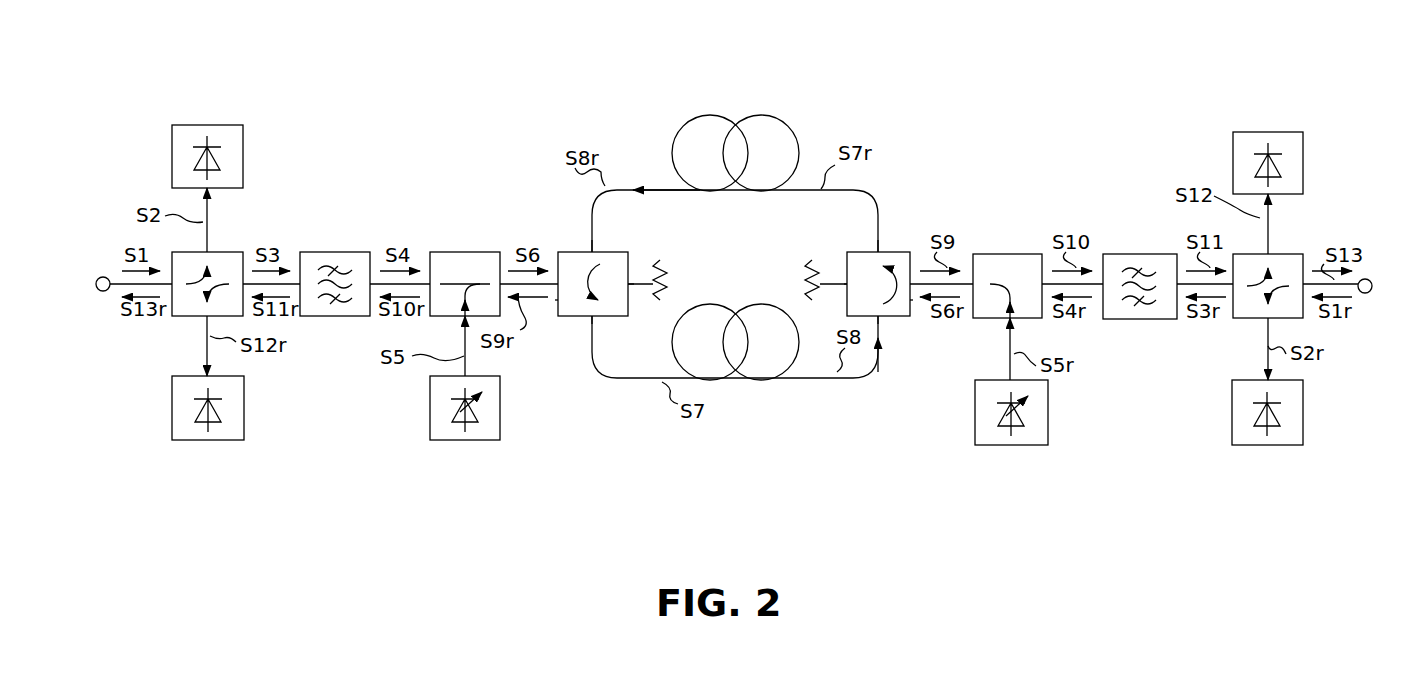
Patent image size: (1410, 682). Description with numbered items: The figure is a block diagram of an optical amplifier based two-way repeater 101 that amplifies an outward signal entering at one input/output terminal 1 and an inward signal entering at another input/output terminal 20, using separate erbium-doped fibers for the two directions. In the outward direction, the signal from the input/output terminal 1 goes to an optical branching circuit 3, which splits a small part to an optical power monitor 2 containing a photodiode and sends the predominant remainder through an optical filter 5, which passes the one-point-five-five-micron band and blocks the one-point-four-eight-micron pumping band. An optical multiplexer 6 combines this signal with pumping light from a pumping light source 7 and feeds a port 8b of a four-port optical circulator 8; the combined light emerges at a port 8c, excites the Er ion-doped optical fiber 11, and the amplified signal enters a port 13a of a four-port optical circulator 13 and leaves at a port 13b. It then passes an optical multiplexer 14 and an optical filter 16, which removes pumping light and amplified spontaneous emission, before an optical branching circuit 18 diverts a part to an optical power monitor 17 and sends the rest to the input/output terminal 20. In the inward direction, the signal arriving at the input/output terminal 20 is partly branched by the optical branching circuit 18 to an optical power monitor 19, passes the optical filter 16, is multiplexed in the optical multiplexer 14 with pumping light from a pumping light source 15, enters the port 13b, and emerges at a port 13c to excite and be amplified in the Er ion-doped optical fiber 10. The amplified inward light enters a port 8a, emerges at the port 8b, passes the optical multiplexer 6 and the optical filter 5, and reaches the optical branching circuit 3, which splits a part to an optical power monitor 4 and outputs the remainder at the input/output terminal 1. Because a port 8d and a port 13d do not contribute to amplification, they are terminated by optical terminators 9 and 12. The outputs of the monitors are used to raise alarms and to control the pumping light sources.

The optical amplifier based two-way repeater 101 is at (372, 35).
The input/output terminal 1 is at (97, 298).
The optical power monitor 2 is at (197, 125).
The optical branching circuit 3 is at (237, 252).
The optical power monitor 4 is at (196, 440).
The optical filter 5 is at (336, 316).
The optical multiplexer 6 is at (442, 252).
The pumping light source 7 is at (440, 440).
The four-port optical circulator 8 is at (626, 252).
The port 8a is at (592, 252).
The port 8b is at (554, 304).
The port 8c is at (598, 316).
The port 8d is at (634, 288).
The optical terminator 9 is at (660, 305).
The optical fiber doped with Er ions 10 is at (722, 120).
The optical fiber doped with Er ions 11 is at (789, 378).
The optical terminator 12 is at (815, 305).
The four-port optical circulator 13 is at (910, 252).
The port 13a is at (886, 320).
The port 13b is at (912, 300).
The port 13c is at (878, 252).
The port 13d is at (847, 276).
The optical multiplexer 14 is at (988, 254).
The pumping light source 15 is at (994, 446).
The optical filter 16 is at (1152, 320).
The optical power monitor 17 is at (1266, 132).
The optical branching circuit 18 is at (1276, 254).
The optical power monitor 19 is at (1256, 446).
The input/output terminal 20 is at (1374, 296).